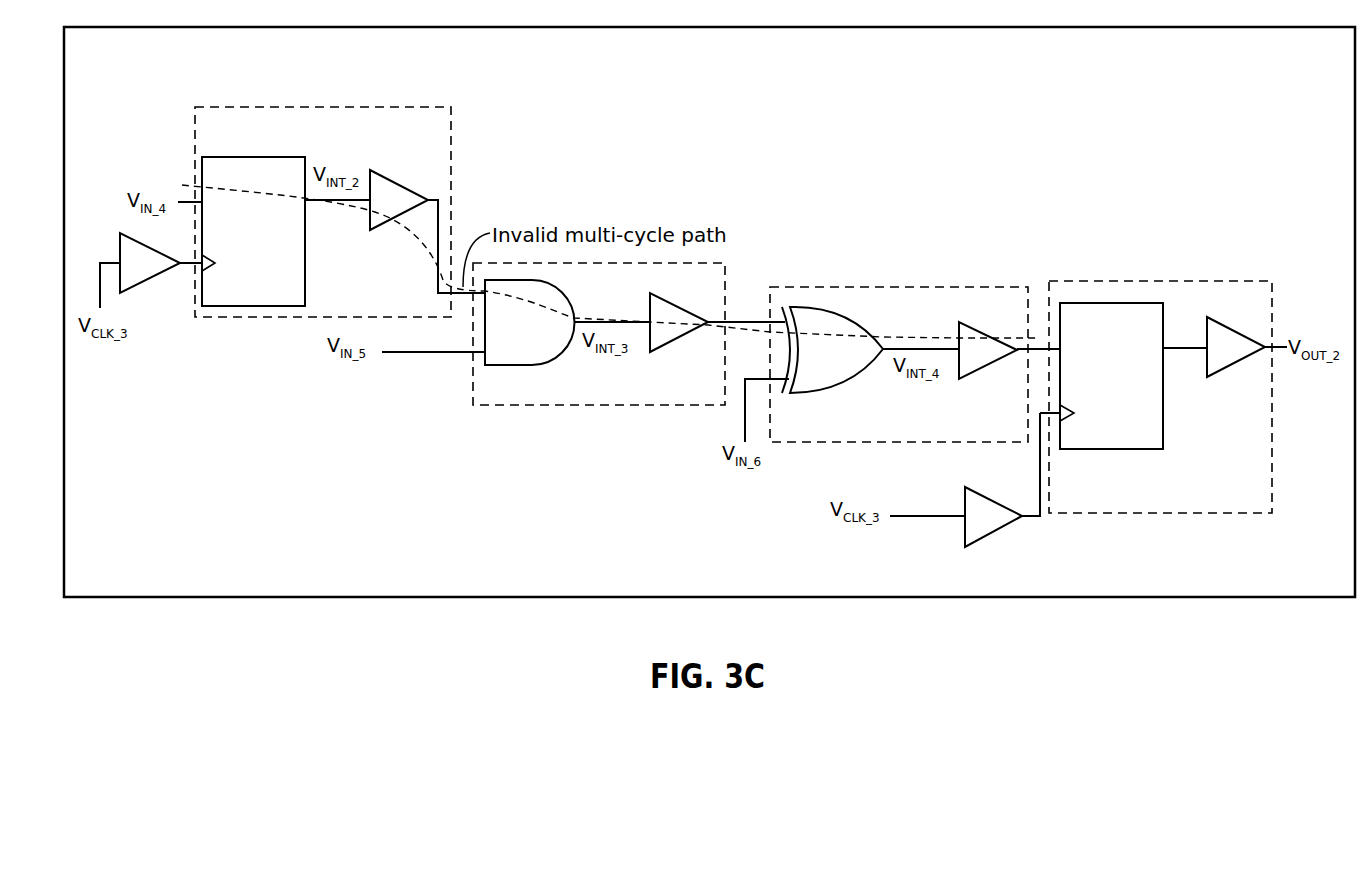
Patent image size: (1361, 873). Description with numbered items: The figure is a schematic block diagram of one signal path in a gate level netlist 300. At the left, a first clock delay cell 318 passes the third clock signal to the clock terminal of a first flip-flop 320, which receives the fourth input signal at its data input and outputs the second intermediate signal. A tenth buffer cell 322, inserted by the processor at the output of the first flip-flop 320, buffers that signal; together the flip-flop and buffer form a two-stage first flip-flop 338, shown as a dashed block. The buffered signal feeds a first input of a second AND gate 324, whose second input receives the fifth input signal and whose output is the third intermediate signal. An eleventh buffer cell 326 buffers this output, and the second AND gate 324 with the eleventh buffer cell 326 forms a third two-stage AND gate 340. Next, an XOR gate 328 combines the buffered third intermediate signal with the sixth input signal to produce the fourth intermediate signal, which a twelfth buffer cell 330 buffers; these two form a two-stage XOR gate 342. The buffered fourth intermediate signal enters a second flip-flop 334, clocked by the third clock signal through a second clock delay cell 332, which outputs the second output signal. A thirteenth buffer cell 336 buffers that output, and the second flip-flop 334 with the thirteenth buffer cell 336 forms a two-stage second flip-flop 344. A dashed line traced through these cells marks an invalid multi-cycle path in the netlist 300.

The gate level netlist 300 is at (362, 628).
The first clock delay cell 318 is at (150, 278).
The first flip-flop 320 is at (257, 157).
The tenth buffer cell 322 is at (400, 180).
The second AND gate 324 is at (530, 367).
The eleventh buffer cell 326 is at (682, 337).
The XOR gate 328 is at (787, 395).
The twelfth buffer cell 330 is at (990, 365).
The second clock delay cell 332 is at (993, 528).
The second flip-flop 334 is at (1112, 452).
The thirteenth buffer cell 336 is at (1237, 362).
The two-stage first flip-flop 338 is at (323, 107).
The third two-stage AND gate 340 is at (727, 305).
The two-stage XOR gate 342 is at (898, 285).
The two-stage second flip-flop 344 is at (1160, 280).